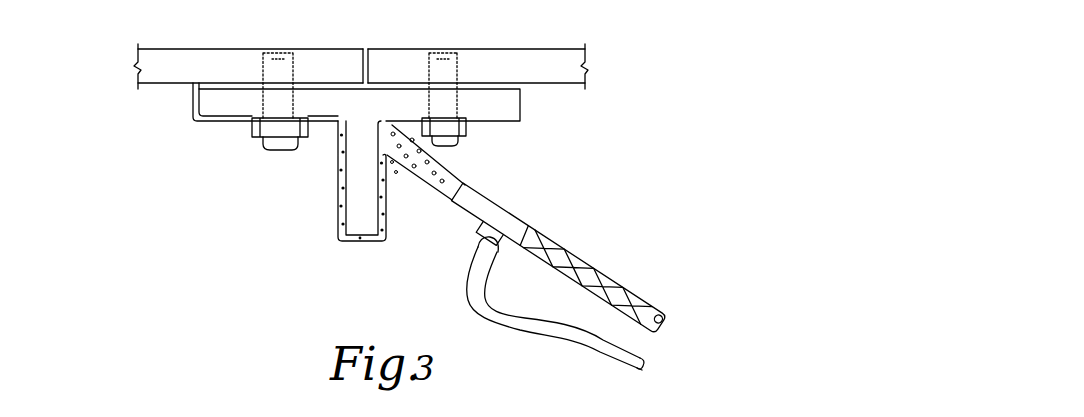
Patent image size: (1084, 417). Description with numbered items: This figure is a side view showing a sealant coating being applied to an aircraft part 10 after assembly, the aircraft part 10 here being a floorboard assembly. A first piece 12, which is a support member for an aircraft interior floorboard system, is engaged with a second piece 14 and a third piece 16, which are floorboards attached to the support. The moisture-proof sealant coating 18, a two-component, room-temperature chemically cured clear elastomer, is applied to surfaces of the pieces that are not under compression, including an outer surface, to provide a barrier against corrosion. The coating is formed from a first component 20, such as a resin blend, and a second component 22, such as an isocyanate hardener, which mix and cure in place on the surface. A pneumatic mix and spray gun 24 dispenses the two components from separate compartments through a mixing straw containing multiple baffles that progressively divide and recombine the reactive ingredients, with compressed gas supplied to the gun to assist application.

The aircraft part 10 is at (283, 208).
The first piece 12 is at (355, 210).
The second piece 14 is at (518, 57).
The third piece 16 is at (172, 50).
The sealant coating 18 is at (528, 92).
The first component 20 is at (438, 173).
The second component 22 is at (438, 185).
The pneumatic mix and spray gun 24 is at (552, 220).